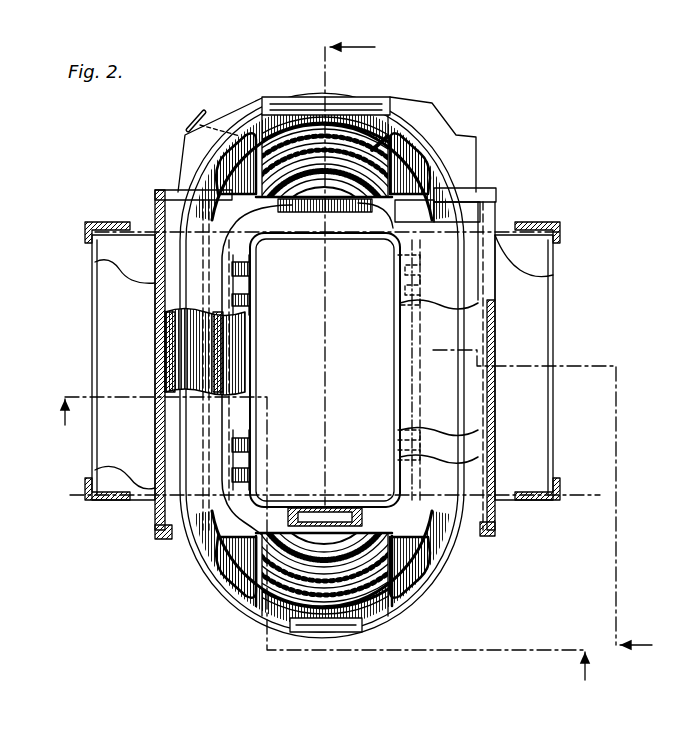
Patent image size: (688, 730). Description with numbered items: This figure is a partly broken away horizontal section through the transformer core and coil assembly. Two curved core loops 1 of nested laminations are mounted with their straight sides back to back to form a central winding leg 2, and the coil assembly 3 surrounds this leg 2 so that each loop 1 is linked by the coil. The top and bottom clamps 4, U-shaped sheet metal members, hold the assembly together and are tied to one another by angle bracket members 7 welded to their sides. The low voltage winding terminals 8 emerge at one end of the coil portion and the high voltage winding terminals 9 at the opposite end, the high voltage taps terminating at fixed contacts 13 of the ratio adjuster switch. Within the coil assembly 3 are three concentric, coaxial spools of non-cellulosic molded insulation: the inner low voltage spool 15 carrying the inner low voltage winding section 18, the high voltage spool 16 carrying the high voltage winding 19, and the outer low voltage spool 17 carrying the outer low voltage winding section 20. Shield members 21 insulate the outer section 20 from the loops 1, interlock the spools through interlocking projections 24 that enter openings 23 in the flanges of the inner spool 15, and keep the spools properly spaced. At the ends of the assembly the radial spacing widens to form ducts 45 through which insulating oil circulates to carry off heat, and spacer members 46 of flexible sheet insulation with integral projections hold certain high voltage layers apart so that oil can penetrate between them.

The core loop 1 is at (100, 313).
The central winding leg 2 is at (330, 367).
The coil assembly 3 is at (460, 114).
The top and bottom clamps 4 is at (497, 348).
The angle bracket member 7 is at (86, 232).
The low voltage winding terminals 8 is at (332, 510).
The high voltage winding terminals 9 is at (193, 118).
The fixed contact 13 is at (272, 125).
The inner low voltage spool 15 is at (272, 514).
The high voltage spool 16 is at (233, 558).
The outer low voltage spool 17 is at (213, 597).
The inner low voltage winding section 18 is at (308, 213).
The high voltage winding 19 is at (293, 566).
The outer low voltage winding section 20 is at (344, 98).
The shield member 21 is at (472, 208).
The opening 23 is at (246, 286).
The interlocking projection 24 is at (398, 284).
The duct 45 is at (378, 543).
The spacer member 46 is at (311, 582).